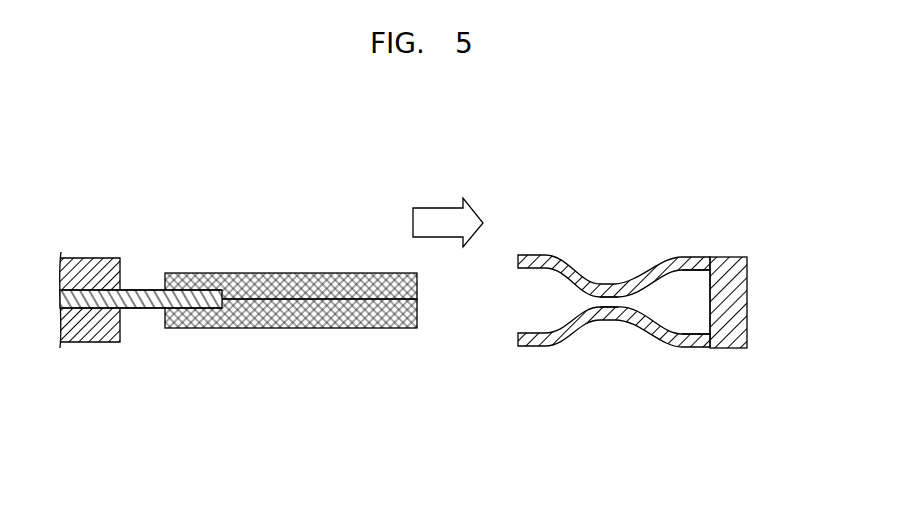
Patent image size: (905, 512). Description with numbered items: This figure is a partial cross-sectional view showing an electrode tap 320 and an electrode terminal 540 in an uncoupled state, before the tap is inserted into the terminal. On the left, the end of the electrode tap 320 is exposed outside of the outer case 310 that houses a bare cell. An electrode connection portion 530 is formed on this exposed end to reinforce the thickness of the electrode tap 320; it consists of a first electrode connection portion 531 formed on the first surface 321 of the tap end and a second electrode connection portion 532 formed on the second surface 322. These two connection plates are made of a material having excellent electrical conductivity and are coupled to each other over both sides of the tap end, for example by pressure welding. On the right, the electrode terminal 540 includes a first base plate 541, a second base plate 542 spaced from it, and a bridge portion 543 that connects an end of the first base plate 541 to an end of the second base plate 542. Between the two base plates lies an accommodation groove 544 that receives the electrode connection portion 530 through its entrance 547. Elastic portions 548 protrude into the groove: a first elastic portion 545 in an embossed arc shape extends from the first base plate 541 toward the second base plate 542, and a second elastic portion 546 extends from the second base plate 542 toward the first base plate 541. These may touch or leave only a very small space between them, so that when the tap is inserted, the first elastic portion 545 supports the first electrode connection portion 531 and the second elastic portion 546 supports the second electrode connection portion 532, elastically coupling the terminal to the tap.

The outer case 310 is at (95, 258).
The electrode tap 320 is at (141, 302).
The first surface 321 is at (137, 290).
The second surface 322 is at (148, 309).
The electrode connection portion 530 is at (291, 319).
The first electrode connection portion 531 is at (252, 273).
The second electrode connection portion 532 is at (255, 328).
The electrode terminal 540 is at (587, 282).
The first base plate 541 is at (523, 256).
The second base plate 542 is at (540, 348).
The bridge portion 543 is at (730, 340).
The accommodation groove 544 is at (694, 312).
The first elastic portion 545 is at (633, 276).
The second elastic portion 546 is at (606, 328).
The entrance 547 is at (510, 312).
The elastic portions 548 is at (631, 256).